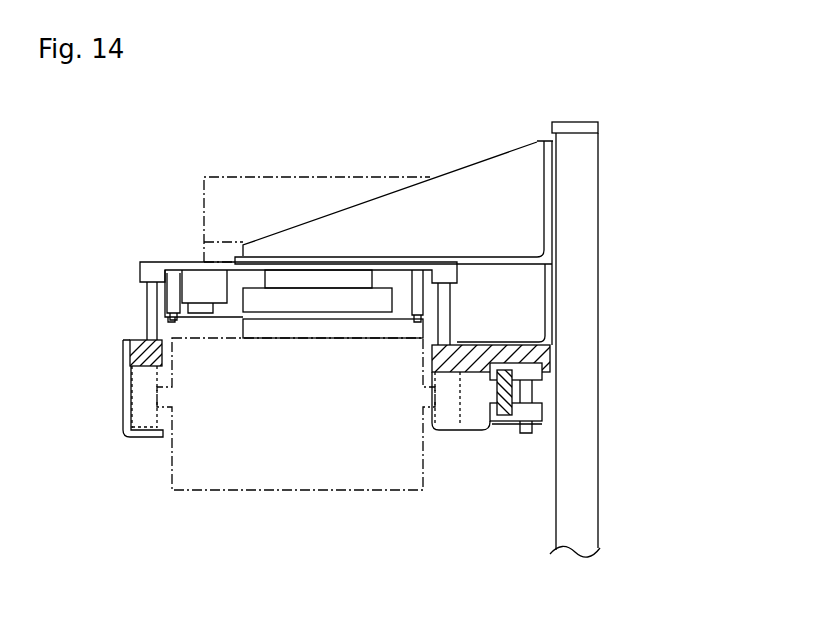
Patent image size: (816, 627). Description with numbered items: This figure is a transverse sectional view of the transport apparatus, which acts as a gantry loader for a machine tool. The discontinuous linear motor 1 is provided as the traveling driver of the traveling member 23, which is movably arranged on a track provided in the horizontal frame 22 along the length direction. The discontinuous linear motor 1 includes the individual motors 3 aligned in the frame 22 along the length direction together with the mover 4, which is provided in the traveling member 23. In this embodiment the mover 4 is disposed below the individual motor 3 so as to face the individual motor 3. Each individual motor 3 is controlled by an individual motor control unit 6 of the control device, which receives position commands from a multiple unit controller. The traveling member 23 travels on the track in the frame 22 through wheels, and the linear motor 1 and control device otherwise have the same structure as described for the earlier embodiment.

The discontinuous linear motor 1 is at (295, 262).
The individual motor 3 is at (322, 297).
The mover 4 is at (355, 327).
The individual motor control unit 6 is at (227, 183).
The frame 22 is at (165, 267).
The traveling member 23 is at (275, 478).